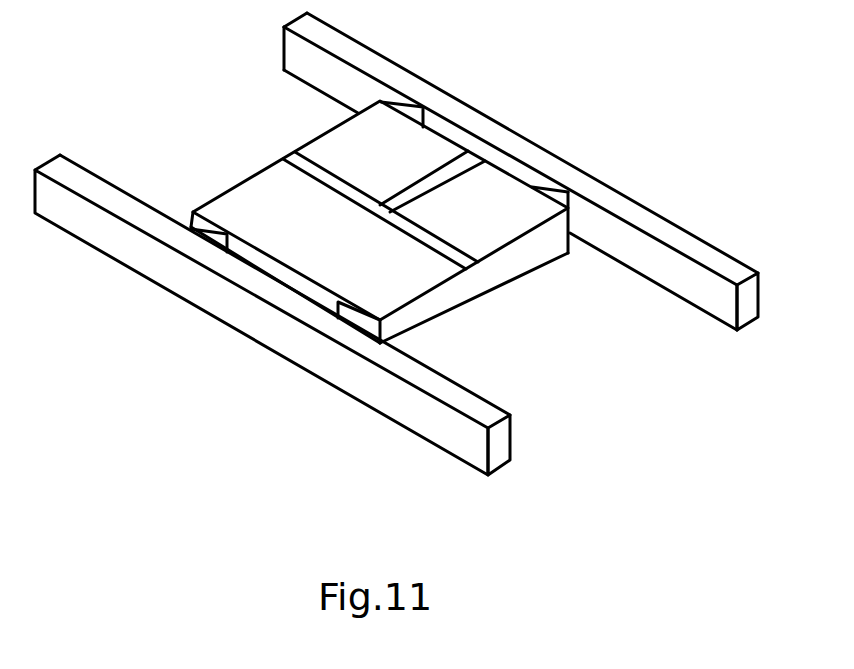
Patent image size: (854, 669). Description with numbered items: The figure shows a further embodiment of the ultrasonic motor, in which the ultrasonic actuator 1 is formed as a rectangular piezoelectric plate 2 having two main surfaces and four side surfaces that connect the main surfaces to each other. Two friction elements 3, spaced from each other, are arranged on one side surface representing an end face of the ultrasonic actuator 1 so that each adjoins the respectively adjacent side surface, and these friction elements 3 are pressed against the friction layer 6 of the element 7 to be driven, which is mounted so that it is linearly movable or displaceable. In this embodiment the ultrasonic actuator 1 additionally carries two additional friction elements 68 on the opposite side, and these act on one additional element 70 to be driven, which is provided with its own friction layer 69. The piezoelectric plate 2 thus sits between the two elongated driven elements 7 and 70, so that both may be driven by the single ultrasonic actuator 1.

The ultrasonic actuator 1 is at (242, 111).
The rectangular piezoelectric plate 2 is at (268, 205).
The friction elements 3 is at (350, 313).
The friction layer 6 is at (122, 178).
The element to be driven 7 is at (82, 228).
The additional friction elements 68 is at (408, 109).
The friction layer 69 is at (691, 297).
The additional element to be driven 70 is at (637, 248).